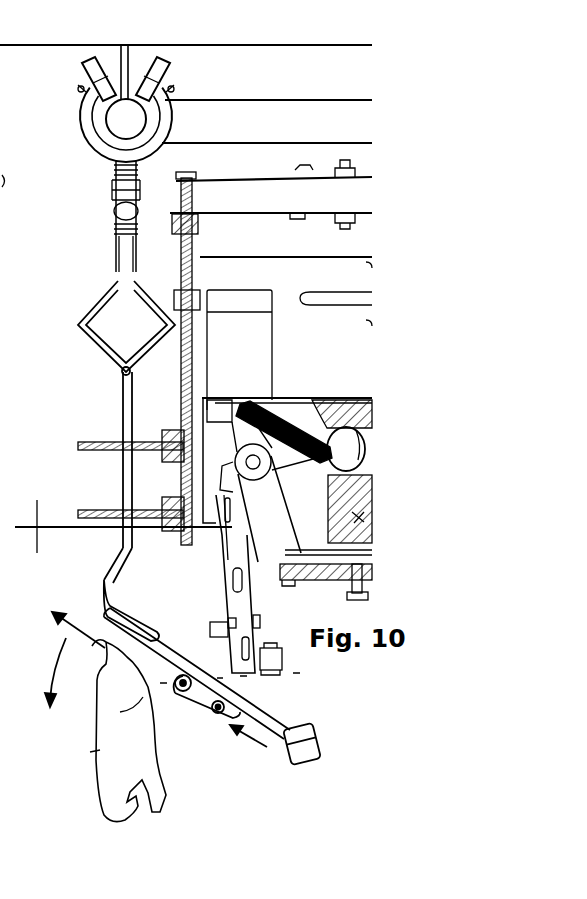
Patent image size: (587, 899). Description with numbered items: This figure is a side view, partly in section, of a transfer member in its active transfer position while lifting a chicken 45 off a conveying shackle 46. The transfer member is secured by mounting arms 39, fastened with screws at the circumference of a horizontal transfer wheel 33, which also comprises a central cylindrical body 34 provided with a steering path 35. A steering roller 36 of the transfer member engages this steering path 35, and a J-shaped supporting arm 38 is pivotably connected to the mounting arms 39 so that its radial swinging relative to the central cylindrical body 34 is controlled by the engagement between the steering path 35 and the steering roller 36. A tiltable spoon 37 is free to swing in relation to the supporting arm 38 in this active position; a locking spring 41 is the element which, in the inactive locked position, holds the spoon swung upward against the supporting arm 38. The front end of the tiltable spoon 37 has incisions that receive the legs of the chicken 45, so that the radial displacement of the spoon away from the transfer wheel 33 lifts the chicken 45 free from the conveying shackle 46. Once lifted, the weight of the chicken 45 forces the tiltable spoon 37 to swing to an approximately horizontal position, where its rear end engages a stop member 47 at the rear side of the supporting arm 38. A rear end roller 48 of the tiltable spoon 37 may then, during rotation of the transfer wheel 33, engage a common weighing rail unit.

The horizontal transfer wheel 33 is at (318, 588).
The central cylindrical body 34 is at (362, 517).
The steering path 35 is at (325, 416).
The steering roller 36 is at (360, 473).
The tiltable spoon 37 is at (270, 717).
The J-shaped supporting arm 38 is at (222, 563).
The mounting arms 39 is at (372, 552).
The locking spring 41 is at (225, 606).
The chicken 45 is at (100, 755).
The conveying shackle 46 is at (105, 567).
The stop member 47 is at (282, 655).
The rear end roller 48 is at (287, 767).